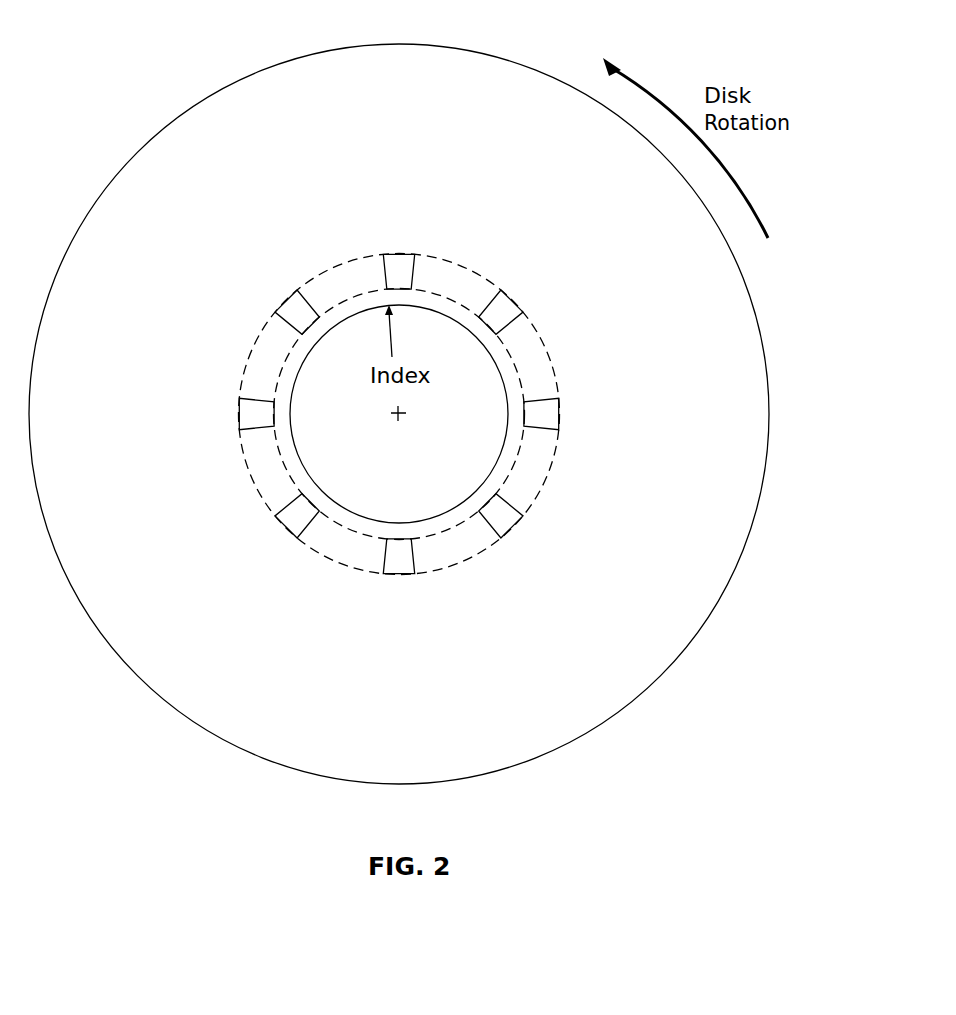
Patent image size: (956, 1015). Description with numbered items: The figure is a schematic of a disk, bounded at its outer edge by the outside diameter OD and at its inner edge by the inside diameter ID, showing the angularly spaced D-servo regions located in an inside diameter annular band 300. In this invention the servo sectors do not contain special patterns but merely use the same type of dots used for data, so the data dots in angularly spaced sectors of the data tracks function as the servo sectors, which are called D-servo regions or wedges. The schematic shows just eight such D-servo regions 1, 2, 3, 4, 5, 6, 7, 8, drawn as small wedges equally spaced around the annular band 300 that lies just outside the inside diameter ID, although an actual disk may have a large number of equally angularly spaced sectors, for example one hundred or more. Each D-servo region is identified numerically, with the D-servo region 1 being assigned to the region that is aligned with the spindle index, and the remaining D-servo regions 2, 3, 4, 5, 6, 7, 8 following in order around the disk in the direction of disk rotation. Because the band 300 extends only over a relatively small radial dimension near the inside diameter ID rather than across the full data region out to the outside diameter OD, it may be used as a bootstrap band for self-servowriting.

The D-servo region 1 is at (399, 254).
The D-servo region 2 is at (506, 298).
The D-servo region 3 is at (560, 414).
The D-servo region 4 is at (509, 531).
The D-servo region 5 is at (399, 574).
The D-servo region 6 is at (289, 528).
The D-servo region 7 is at (239, 414).
The D-servo region 8 is at (289, 298).
The inside diameter annular band 300 is at (539, 469).
The inside diameter ID is at (498, 471).
The outside diameter OD is at (767, 468).